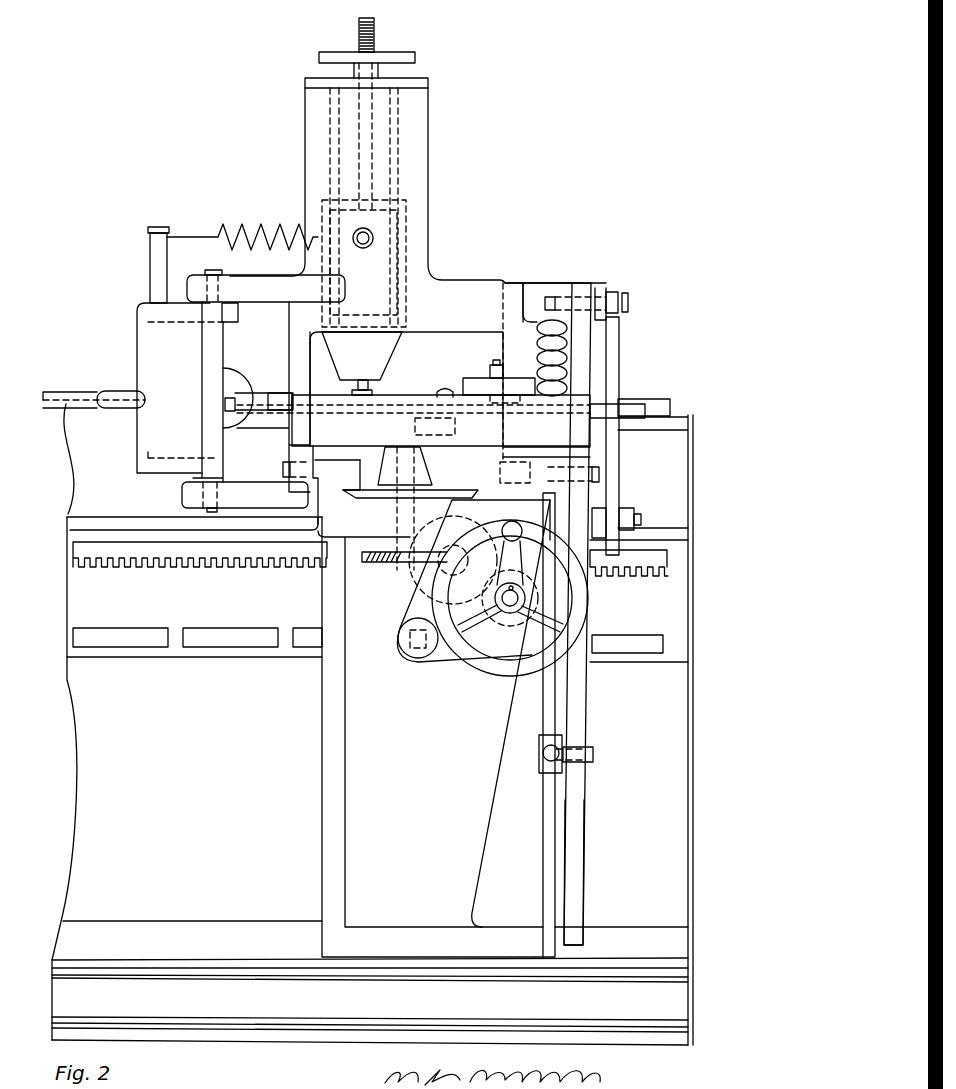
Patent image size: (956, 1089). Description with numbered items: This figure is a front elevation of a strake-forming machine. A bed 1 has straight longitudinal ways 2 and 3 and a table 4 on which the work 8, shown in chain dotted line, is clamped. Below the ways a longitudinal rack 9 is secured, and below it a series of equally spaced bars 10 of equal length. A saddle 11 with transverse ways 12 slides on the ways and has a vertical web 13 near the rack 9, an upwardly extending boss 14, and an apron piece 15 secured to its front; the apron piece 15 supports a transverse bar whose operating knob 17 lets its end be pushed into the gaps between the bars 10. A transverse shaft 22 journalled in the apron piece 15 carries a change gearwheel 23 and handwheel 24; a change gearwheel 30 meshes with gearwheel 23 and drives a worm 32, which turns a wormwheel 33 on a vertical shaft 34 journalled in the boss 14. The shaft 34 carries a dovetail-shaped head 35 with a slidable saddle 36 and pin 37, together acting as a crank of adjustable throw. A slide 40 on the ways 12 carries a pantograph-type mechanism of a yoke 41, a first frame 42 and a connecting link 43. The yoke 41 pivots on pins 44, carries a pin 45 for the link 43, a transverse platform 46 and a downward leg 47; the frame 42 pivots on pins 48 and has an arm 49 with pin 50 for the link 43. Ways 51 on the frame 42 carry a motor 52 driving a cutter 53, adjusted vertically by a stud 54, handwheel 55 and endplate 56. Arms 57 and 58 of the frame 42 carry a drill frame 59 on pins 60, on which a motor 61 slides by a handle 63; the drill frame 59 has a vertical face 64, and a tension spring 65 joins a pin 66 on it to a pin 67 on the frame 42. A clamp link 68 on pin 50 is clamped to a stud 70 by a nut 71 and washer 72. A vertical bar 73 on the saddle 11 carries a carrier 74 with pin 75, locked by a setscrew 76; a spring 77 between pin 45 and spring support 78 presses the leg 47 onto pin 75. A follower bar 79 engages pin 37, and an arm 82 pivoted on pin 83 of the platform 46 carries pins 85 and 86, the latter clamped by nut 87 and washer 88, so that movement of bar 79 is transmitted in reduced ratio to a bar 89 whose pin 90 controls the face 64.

The bed 1 is at (92, 795).
The longitudinal ways 2 is at (82, 522).
The longitudinal ways 3 is at (77, 938).
The table 4 is at (675, 421).
The work 8 is at (67, 393).
The longitudinal rack 9 is at (125, 555).
The longitudinally disposed bars 10 is at (208, 637).
The saddle 11 is at (332, 785).
The transverse ways 12 is at (402, 493).
The vertical web 13 is at (360, 697).
The boss 14 is at (392, 464).
The apron piece 15 is at (435, 651).
The operating knob 17 is at (407, 648).
The transverse shaft 22 is at (505, 604).
The change gearwheel 23 is at (515, 622).
The handwheel 24 is at (480, 661).
The change gearwheel 30 is at (426, 594).
The worm 32 is at (418, 585).
The wormwheel 33 is at (395, 562).
The vertical shaft 34 is at (400, 521).
The dovetail-shaped head 35 is at (398, 433).
The slidable saddle 36 is at (447, 436).
The pin 37 is at (445, 390).
The slide 40 is at (325, 486).
The yoke 41 is at (300, 452).
The first frame 42 is at (442, 288).
The connecting link 43 is at (600, 288).
The pins 44 is at (283, 468).
The pin 45 is at (613, 296).
The transverse platform 46 is at (292, 395).
The leg 47 is at (586, 843).
The pins 48 is at (510, 588).
The arm 49 is at (530, 292).
The pin 50 is at (625, 298).
The ways 51 is at (395, 166).
The motor 52 is at (350, 352).
The cutter 53 is at (357, 388).
The stud 54 is at (373, 34).
The handwheel 55 is at (400, 61).
The endplate 56 is at (425, 86).
The arm 57 is at (268, 284).
The arm 58 is at (263, 497).
The drill frame 59 is at (155, 358).
The pins 60 is at (212, 270).
The motor 61 is at (228, 420).
The handle 63 is at (113, 392).
The vertically disposed face 64 is at (215, 348).
The tension spring 65 is at (250, 225).
The pin 66 is at (160, 258).
The pin 67 is at (372, 236).
The clamp link 68 is at (617, 347).
The stud 70 is at (641, 520).
The nut 71 is at (632, 510).
The washer 72 is at (603, 511).
The vertical bar 73 is at (545, 878).
The carrier 74 is at (543, 770).
The pin 75 is at (586, 762).
The setscrew 76 is at (566, 752).
The spring 77 is at (546, 344).
The spring support 78 is at (610, 456).
The bar 79 is at (660, 405).
The arm 82 is at (463, 385).
The pin 83 is at (490, 380).
The pin 85 is at (524, 418).
The pin 86 is at (515, 453).
The nut 87 is at (494, 370).
The washer 88 is at (503, 378).
The bar 89 is at (625, 406).
The pin 90 is at (228, 400).